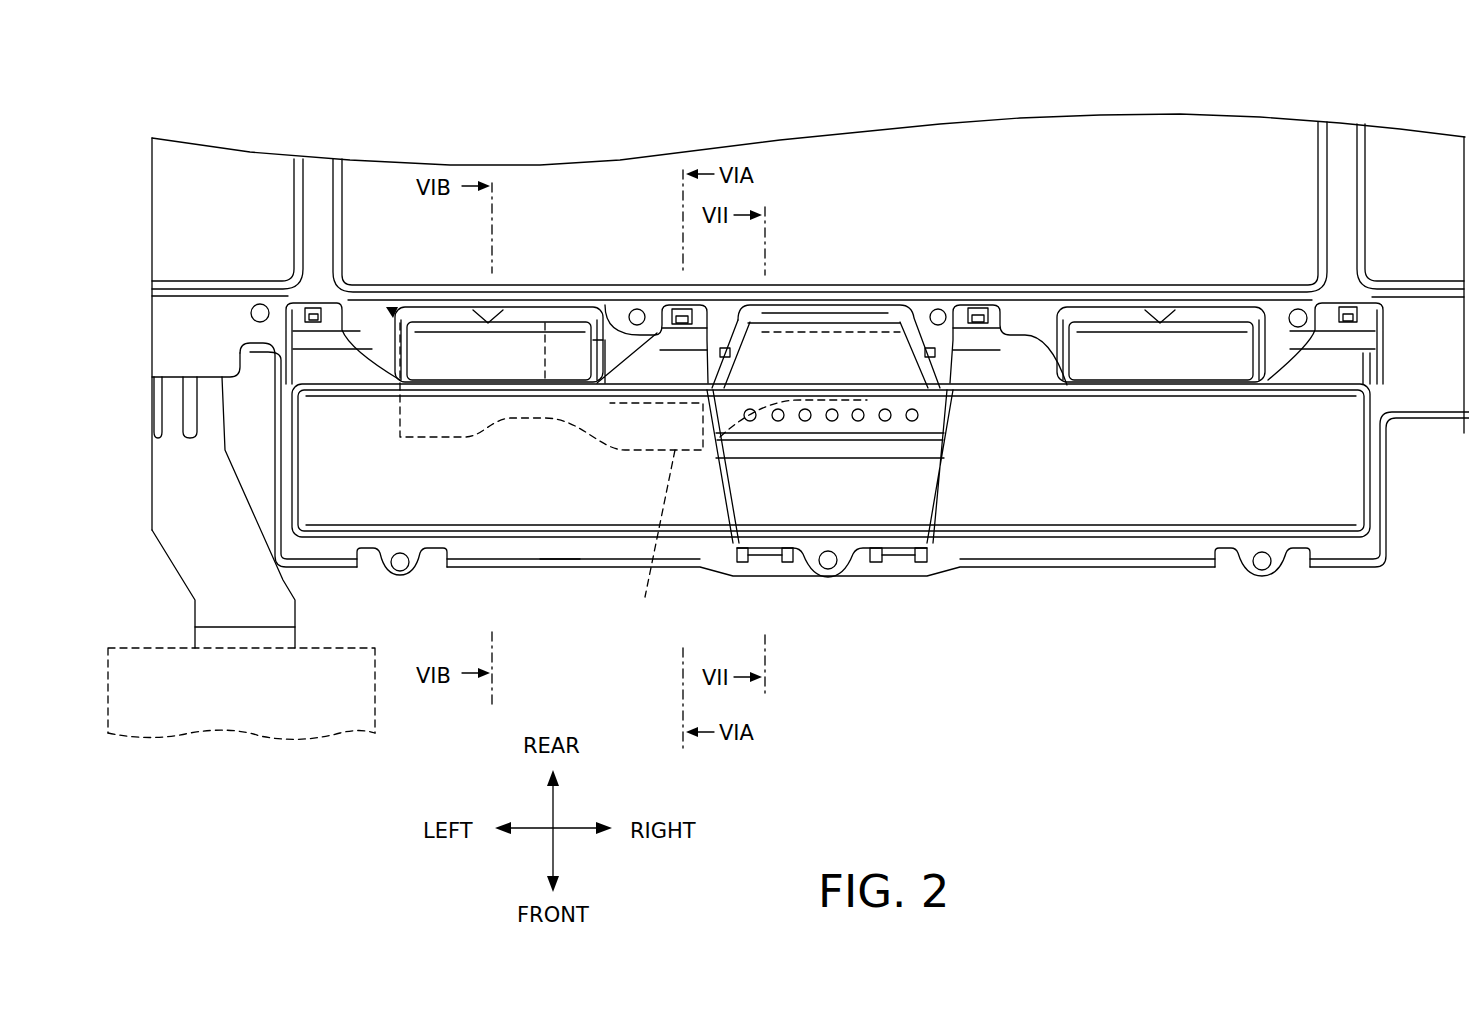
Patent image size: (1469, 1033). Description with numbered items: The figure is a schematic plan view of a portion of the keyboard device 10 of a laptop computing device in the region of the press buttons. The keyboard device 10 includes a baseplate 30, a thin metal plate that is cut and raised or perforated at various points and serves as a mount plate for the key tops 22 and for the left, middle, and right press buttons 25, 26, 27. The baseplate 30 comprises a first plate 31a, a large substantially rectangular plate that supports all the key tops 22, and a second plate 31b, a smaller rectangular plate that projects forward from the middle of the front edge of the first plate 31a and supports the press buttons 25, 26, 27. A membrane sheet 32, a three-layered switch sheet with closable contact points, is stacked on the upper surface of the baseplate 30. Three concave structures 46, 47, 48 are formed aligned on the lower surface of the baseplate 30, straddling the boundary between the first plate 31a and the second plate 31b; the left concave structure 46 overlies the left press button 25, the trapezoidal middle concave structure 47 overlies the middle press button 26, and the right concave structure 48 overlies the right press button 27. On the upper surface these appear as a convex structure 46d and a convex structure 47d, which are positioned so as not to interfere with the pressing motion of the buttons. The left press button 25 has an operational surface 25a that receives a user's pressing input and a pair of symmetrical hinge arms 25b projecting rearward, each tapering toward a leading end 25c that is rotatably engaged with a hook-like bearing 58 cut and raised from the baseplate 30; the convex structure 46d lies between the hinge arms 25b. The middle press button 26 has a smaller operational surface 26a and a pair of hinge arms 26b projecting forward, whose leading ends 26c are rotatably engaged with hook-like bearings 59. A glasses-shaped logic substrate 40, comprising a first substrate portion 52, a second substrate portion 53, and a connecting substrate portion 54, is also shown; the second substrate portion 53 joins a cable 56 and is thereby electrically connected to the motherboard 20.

The keyboard device 10 is at (152, 80).
The motherboard 20 is at (353, 647).
The key tops 22 is at (208, 173).
The left press button 25 is at (520, 500).
The operational surface 25a is at (463, 500).
The hinge arm 25b is at (262, 303).
The leading end 25c is at (313, 303).
The middle press button 26 is at (825, 502).
The operational surface 26a is at (870, 458).
The hinge arm 26b is at (787, 570).
The leading end 26c is at (743, 577).
The right press button 27 is at (1110, 483).
The baseplate 30 is at (380, 305).
The first plate 31a is at (362, 317).
The second plate 31b is at (555, 572).
The membrane sheet 32 is at (173, 333).
The logic substrate 40 is at (633, 453).
The left concave structure 46 is at (520, 340).
The convex structure 46d is at (457, 333).
The middle concave structure 47 is at (823, 340).
The convex structure 47d is at (845, 347).
The right concave structure 48 is at (1210, 340).
The first substrate portion 52 is at (790, 340).
The second substrate portion 53 is at (543, 330).
The connecting substrate portion 54 is at (652, 541).
The cable 56 is at (180, 558).
The hook-like bearing 58 is at (305, 305).
The hook-like bearing 59 is at (763, 570).